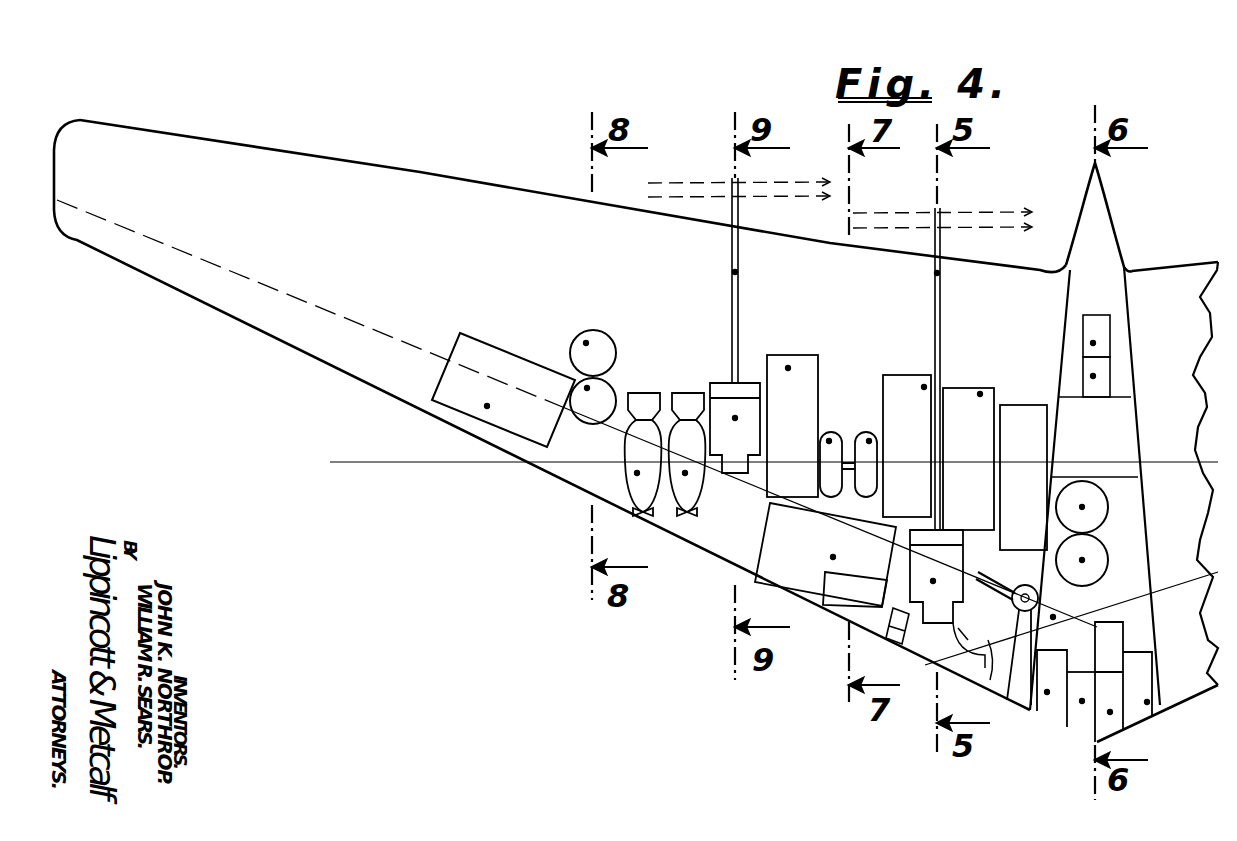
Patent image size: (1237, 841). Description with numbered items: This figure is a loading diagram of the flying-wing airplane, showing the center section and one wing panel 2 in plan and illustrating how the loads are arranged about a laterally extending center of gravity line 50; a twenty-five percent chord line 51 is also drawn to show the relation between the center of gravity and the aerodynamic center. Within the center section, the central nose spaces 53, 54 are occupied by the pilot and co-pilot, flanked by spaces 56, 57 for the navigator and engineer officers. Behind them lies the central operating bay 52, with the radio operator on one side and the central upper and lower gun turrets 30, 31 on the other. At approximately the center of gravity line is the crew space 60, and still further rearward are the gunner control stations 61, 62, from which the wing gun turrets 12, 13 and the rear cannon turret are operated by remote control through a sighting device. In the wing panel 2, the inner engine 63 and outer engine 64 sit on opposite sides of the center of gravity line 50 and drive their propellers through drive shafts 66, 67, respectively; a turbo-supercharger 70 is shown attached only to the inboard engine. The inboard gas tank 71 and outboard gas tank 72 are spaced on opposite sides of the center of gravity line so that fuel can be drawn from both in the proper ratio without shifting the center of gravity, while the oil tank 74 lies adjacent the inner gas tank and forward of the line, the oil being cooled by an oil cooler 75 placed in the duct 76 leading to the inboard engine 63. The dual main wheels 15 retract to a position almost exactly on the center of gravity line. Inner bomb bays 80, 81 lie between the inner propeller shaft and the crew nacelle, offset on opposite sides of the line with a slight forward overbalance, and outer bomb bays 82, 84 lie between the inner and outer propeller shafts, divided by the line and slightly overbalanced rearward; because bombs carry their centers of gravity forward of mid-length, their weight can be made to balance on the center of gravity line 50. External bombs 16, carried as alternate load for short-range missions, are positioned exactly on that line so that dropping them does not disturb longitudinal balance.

The wing panel 2 is at (313, 156).
The upper gun turret 12 is at (586, 343).
The lower gun turret 13 is at (587, 388).
The dual main wheels 15 is at (869, 441).
The external bombs 16 is at (685, 473).
The upper gun turret 30 is at (1082, 507).
The lower gun turret 31 is at (1082, 560).
The center of gravity line 50 is at (1160, 478).
The 25% chord line 51 is at (247, 277).
The operating bay 52 is at (1135, 413).
The central nose space 53 is at (1082, 701).
The central nose space 54 is at (1110, 712).
The navigator space 56 is at (1047, 692).
The engineer space 57 is at (1175, 722).
The crew space 60 is at (1120, 448).
The gunner control station 61 is at (1110, 327).
The gunner control station 62 is at (1110, 367).
The inner engine 63 is at (933, 581).
The outer engine 64 is at (735, 418).
The drive shaft 66 is at (960, 273).
The drive shaft 67 is at (733, 273).
The supercharger 70 is at (1023, 586).
The inboard gas tank 71 is at (833, 557).
The outboard gas tank 72 is at (487, 406).
The oil tank 74 is at (823, 590).
The oil cooler 75 is at (876, 653).
The duct 76 is at (1110, 645).
The inner bomb bay 80 is at (1037, 451).
The inner bomb bay 81 is at (980, 394).
The outer bomb bay 82 is at (924, 387).
The outer bomb bay 84 is at (805, 452).